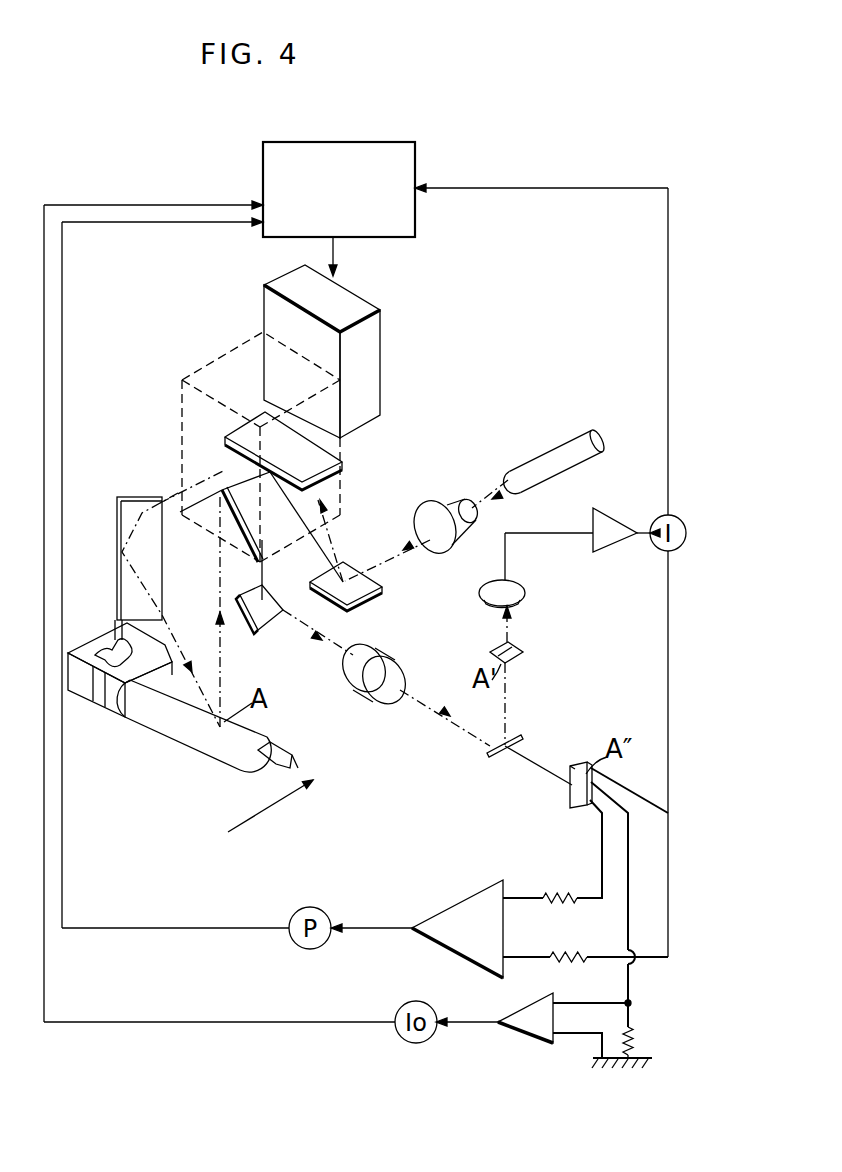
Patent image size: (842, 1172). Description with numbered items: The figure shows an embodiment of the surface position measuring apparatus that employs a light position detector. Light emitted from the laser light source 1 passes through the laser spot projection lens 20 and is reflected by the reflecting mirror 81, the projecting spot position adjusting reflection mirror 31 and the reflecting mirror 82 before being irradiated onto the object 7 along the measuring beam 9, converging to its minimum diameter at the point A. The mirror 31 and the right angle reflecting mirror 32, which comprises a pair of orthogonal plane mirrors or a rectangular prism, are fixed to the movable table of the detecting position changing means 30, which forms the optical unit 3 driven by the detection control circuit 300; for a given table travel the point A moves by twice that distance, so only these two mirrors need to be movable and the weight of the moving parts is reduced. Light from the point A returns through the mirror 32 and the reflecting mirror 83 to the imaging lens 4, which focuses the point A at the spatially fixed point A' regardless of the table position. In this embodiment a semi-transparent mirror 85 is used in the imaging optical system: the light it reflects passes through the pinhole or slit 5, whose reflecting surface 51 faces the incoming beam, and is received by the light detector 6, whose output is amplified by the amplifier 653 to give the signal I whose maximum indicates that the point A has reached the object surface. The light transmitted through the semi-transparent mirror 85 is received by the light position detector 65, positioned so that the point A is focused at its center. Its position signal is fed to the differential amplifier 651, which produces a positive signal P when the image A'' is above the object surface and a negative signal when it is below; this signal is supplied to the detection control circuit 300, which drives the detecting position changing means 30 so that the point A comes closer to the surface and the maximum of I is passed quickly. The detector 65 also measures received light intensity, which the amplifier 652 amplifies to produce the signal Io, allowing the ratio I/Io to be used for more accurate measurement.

The detection control circuit 300 is at (404, 237).
The detecting position changing means 30 is at (381, 336).
The optical deflection unit 3 is at (272, 350).
The projecting spot position adjusting reflection mirror 31 is at (288, 432).
The right angle reflecting mirror 32 is at (205, 492).
The reflecting mirror 82 is at (138, 494).
The measuring beam 9 is at (222, 727).
The object 7 is at (170, 735).
The laser light source 1 is at (552, 455).
The laser spot projection lens 20 is at (447, 503).
The reflecting mirror 81 is at (352, 566).
The reflecting mirror 83 is at (276, 607).
The imaging lens 4 is at (356, 686).
The semi-transparent mirror 85 is at (500, 757).
The pinhole or slit 5 is at (513, 648).
The reflecting surface 51 is at (496, 650).
The light detector 6 is at (520, 590).
The amplifier 653 is at (615, 548).
The light position detector 65 is at (577, 810).
The differential amplifier 651 is at (452, 908).
The amplifier 652 is at (532, 1035).